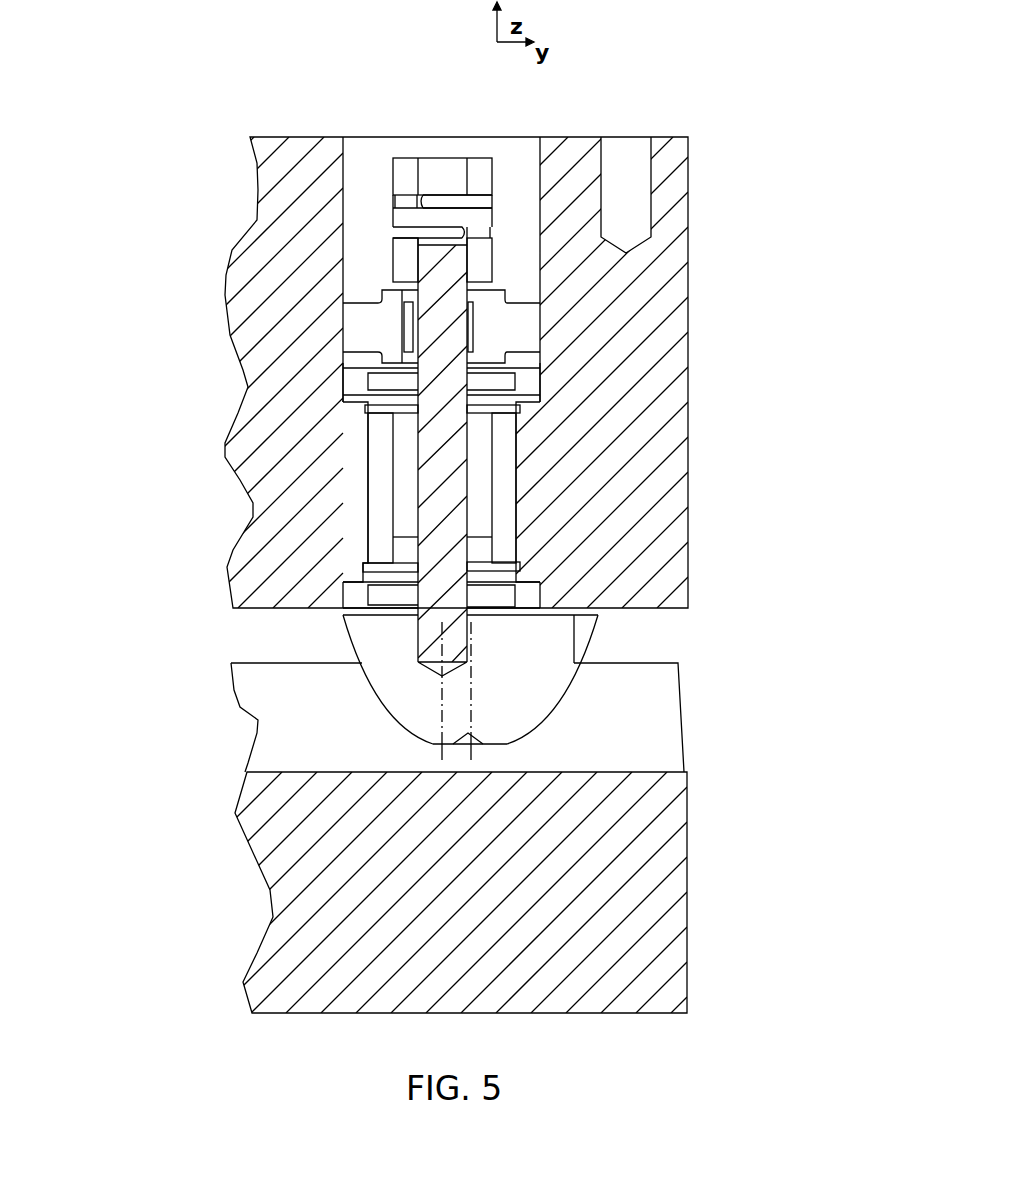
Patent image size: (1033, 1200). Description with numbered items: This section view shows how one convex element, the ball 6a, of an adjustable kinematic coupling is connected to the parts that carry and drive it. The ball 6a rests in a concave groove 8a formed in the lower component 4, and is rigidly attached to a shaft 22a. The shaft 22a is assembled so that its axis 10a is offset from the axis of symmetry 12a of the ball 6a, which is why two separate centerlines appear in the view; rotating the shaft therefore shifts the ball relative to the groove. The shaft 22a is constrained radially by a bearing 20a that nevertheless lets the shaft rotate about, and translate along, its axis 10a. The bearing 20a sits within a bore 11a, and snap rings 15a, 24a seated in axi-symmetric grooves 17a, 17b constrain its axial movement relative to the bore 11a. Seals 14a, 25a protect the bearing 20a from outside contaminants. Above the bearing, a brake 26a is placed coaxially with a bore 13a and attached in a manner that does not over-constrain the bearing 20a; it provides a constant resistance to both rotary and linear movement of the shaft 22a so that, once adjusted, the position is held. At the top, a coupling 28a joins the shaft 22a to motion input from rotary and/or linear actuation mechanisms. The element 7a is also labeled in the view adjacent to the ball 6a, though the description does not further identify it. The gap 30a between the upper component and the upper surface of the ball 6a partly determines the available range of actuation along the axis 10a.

The lower component 4 is at (687, 872).
The convex element (ball) 6a is at (537, 722).
The conical insert 7a is at (580, 625).
The concave element (groove) 8a is at (317, 728).
The shaft axis 10a is at (440, 758).
The bore 11a is at (367, 437).
The axis of symmetry 12a is at (471, 760).
The bore 13a is at (540, 176).
The seal 14a is at (528, 602).
The snap ring 15a is at (363, 562).
The axi-symmetric groove 17a is at (520, 404).
The axi-symmetric groove 17b is at (522, 562).
The bearing 20a is at (498, 523).
The shaft 22a is at (418, 650).
The snap ring 24a is at (364, 410).
The seal 25a is at (533, 381).
The brake 26a is at (520, 330).
The coupling 28a is at (405, 157).
The gap 30a is at (341, 612).